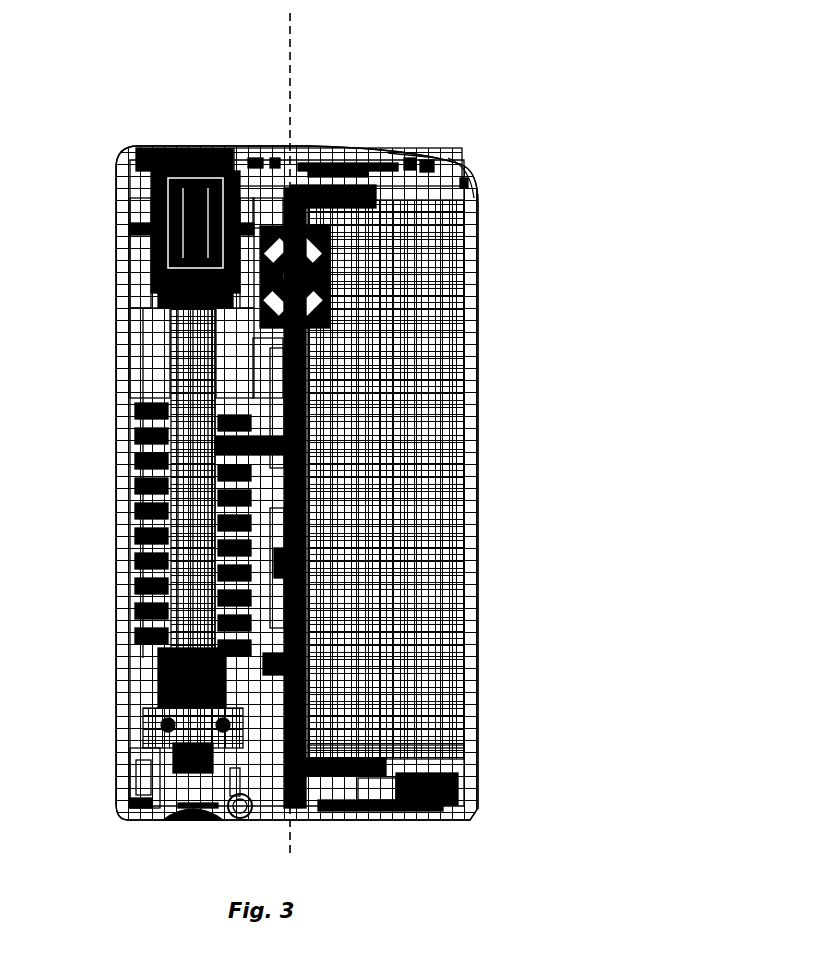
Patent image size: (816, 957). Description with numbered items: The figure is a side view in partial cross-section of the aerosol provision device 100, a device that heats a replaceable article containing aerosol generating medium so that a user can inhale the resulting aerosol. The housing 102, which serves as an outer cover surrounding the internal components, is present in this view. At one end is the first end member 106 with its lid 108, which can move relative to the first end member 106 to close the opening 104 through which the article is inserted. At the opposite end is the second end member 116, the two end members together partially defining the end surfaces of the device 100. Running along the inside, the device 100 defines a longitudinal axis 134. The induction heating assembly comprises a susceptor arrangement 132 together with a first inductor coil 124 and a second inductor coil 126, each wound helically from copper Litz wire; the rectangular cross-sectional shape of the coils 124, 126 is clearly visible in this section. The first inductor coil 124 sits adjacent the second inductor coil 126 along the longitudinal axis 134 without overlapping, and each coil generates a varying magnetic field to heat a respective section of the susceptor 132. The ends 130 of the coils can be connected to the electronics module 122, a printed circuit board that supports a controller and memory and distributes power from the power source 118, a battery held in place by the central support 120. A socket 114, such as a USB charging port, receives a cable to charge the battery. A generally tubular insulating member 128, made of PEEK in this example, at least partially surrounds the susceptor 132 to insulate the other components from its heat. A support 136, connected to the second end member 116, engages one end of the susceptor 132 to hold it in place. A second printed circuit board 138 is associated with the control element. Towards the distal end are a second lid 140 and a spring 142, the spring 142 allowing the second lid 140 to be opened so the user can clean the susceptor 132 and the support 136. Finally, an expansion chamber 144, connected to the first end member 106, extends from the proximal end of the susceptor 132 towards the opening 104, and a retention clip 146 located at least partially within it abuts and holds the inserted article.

The aerosol provision device 100 is at (393, 63).
The housing 102 is at (470, 358).
The opening 104 is at (182, 140).
The first end member 106 is at (450, 168).
The lid 108 is at (372, 146).
The socket 114 is at (444, 778).
The second end member 116 is at (130, 805).
The power source 118 is at (452, 482).
The central support 120 is at (325, 400).
The electronics module 122 is at (290, 522).
The first inductor coil 124 is at (132, 320).
The second inductor coil 126 is at (128, 552).
The insulating member 128 is at (138, 268).
The ends of the inductor coils 130 is at (262, 415).
The susceptor arrangement 132 is at (166, 420).
The longitudinal axis 134 is at (280, 28).
The support 136 is at (162, 705).
The second printed circuit board 138 is at (308, 270).
The second lid 140 is at (203, 806).
The spring 142 is at (236, 812).
The expansion chamber 144 is at (148, 233).
The retention clip 146 is at (165, 215).